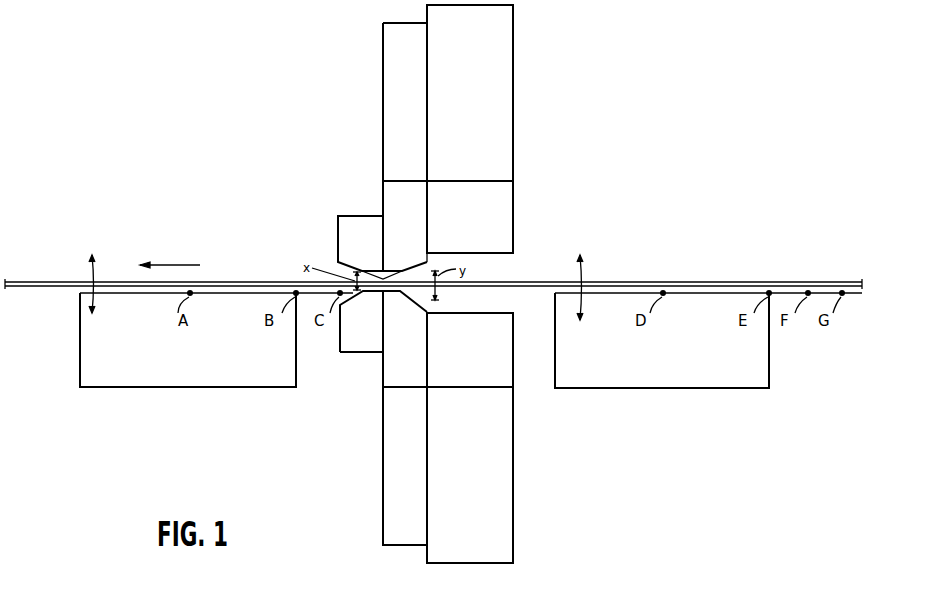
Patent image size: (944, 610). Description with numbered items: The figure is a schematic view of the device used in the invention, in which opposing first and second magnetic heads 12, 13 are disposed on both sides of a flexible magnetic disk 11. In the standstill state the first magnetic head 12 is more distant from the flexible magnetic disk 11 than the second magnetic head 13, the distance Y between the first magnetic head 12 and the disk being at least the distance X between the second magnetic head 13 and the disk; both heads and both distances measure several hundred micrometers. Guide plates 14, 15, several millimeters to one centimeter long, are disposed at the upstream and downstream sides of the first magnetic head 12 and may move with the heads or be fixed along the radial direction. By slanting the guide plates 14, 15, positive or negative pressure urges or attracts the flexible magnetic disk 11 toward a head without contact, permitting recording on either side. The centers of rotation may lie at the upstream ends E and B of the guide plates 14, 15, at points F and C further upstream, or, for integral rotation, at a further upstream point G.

The flexible magnetic disk 11 is at (514, 282).
The first magnetic head 12 is at (371, 305).
The second magnetic head 13 is at (371, 260).
The guide plate 14 is at (693, 377).
The guide plate 15 is at (267, 375).